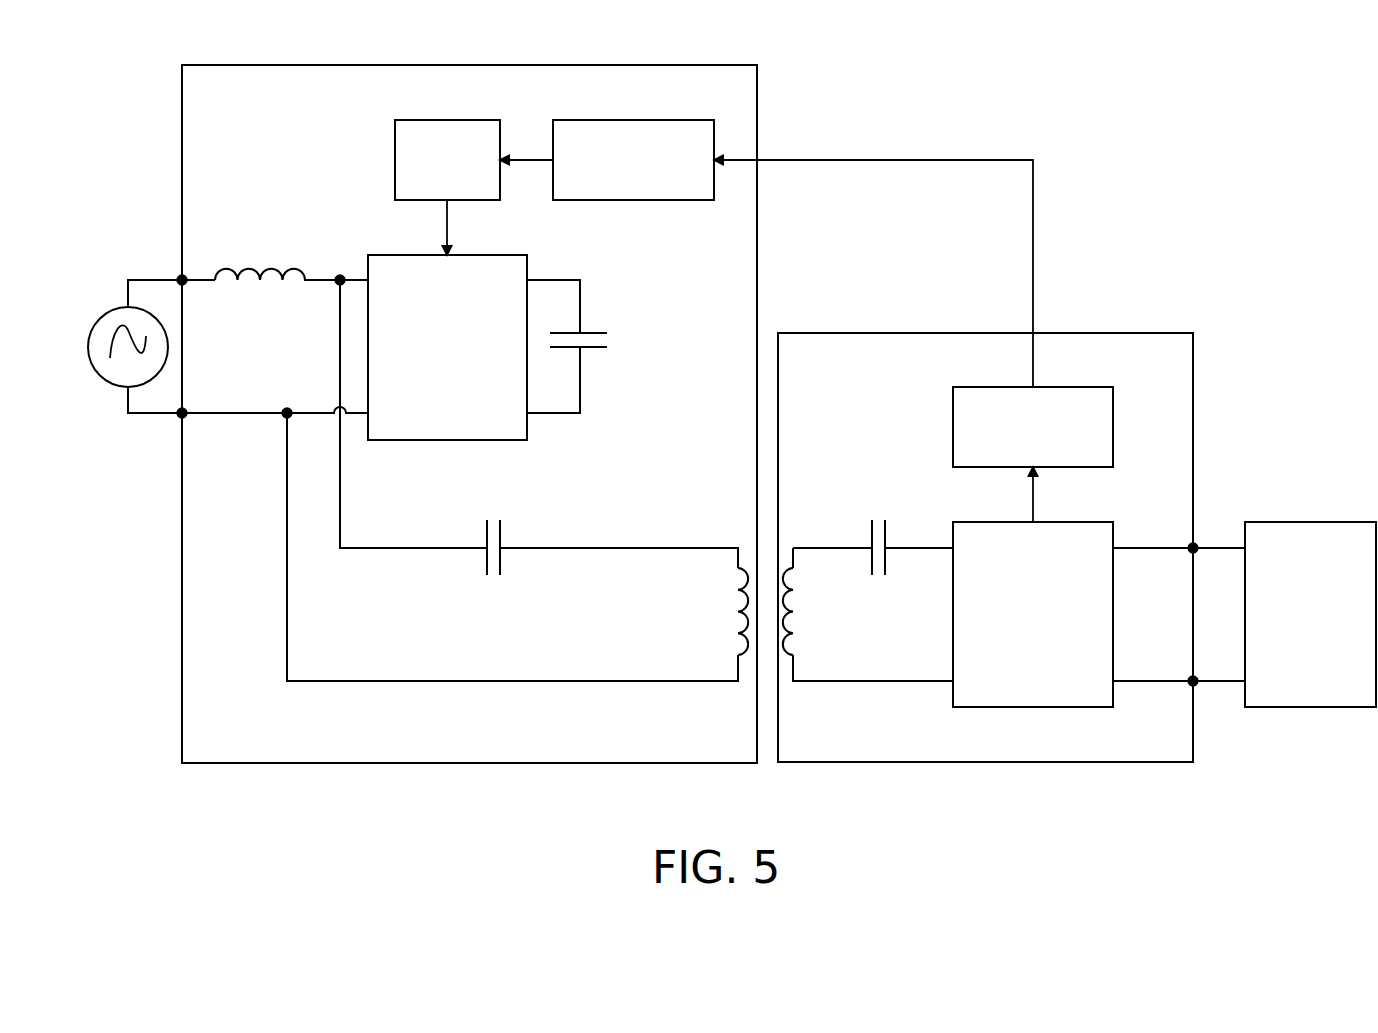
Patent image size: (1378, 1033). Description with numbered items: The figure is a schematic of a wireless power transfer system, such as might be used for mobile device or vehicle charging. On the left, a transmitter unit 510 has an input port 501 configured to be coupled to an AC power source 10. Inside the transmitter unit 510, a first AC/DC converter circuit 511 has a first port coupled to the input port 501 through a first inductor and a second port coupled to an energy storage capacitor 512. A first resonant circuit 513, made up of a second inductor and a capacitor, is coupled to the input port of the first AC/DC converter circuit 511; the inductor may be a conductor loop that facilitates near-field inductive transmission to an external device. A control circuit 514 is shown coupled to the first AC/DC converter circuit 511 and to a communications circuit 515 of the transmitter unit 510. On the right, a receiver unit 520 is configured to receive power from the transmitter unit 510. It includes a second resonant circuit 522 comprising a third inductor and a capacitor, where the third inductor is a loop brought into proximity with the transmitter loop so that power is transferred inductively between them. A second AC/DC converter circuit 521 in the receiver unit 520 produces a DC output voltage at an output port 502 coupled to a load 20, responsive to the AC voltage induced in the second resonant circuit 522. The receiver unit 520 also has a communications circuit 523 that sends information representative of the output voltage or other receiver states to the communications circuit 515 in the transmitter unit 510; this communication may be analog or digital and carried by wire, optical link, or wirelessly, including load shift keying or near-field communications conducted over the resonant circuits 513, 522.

The AC power source 10 is at (88, 347).
The load 20 is at (1313, 522).
The input port 501 is at (210, 315).
The output port 502 is at (1220, 495).
The transmitter unit 510 is at (467, 65).
The first AC/DC converter circuit 511 is at (447, 440).
The capacitor C1 network 512 is at (603, 263).
The first resonant circuit 513 is at (340, 697).
The control unit 514 is at (447, 120).
The communications circuit 515 is at (637, 120).
The receiver unit 520 is at (986, 333).
The second AC/DC converter circuit 521 is at (953, 613).
The second resonant circuit 522 is at (873, 465).
The communications circuit 523 is at (953, 425).